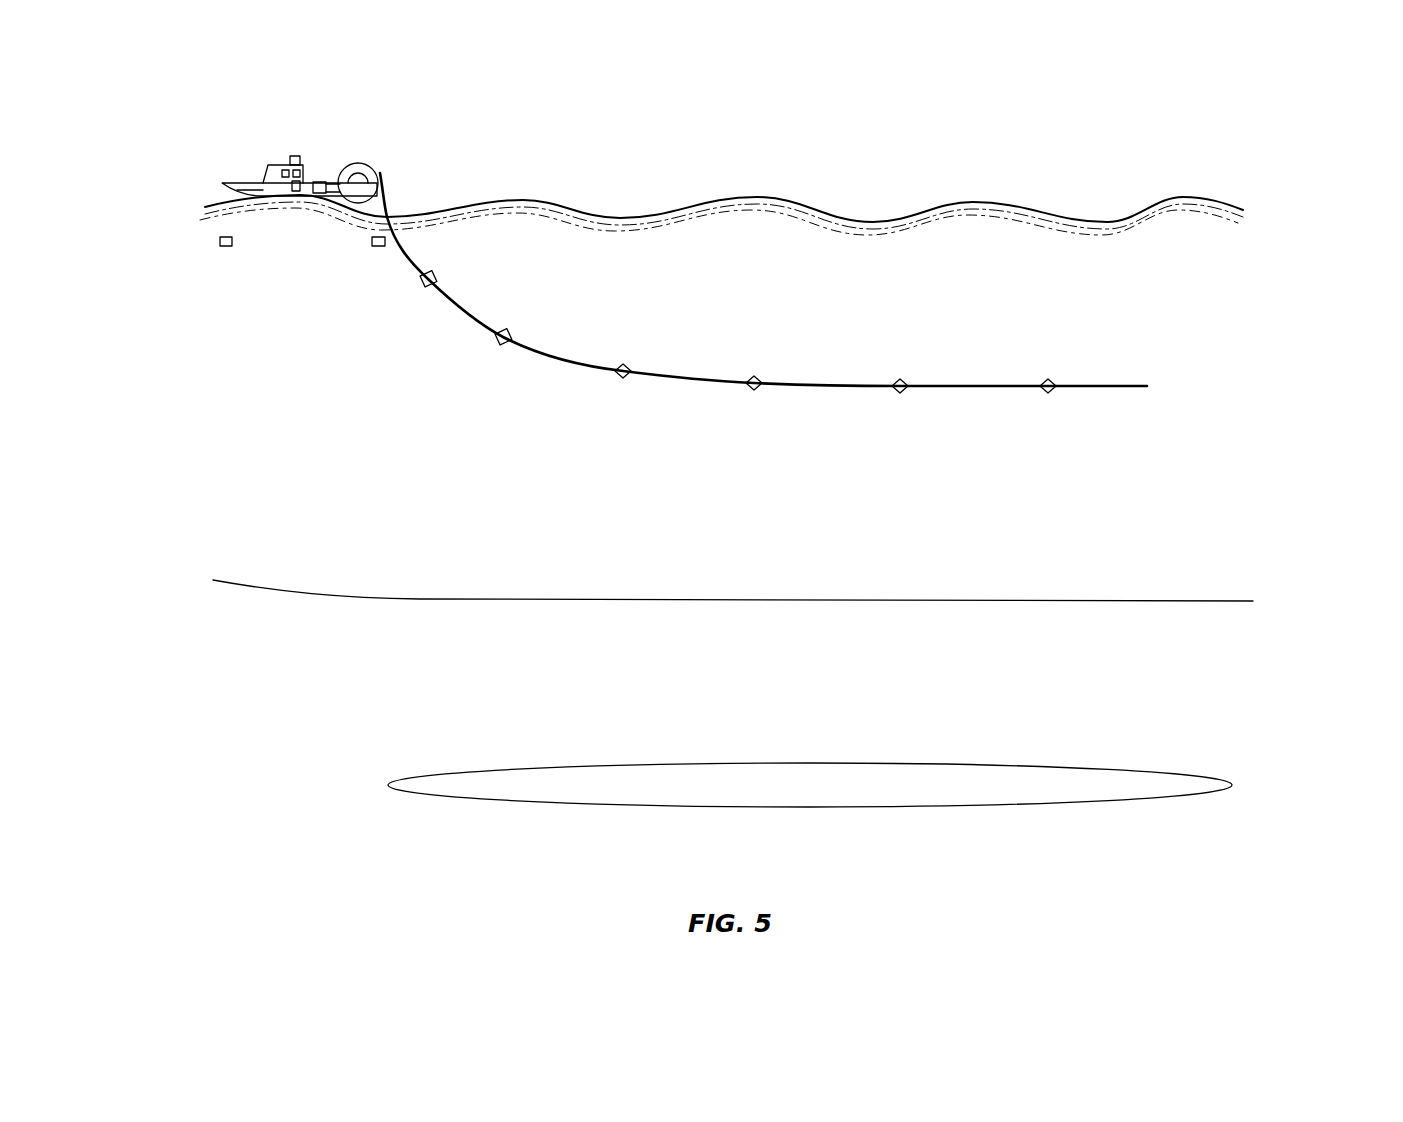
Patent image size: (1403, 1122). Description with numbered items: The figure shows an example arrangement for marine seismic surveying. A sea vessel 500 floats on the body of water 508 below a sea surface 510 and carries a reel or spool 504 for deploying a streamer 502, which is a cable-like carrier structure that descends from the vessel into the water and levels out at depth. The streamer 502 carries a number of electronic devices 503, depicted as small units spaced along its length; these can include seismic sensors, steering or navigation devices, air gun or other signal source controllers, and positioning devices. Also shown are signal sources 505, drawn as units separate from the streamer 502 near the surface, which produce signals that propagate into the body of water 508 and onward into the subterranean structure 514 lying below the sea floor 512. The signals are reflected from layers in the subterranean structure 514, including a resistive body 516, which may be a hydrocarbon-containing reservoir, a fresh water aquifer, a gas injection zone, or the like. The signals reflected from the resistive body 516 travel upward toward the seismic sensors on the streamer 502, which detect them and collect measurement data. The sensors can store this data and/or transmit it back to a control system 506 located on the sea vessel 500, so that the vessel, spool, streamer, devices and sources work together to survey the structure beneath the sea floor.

The sea vessel 500 is at (233, 180).
The streamer 502 is at (570, 358).
The electronic devices 503 is at (615, 373).
The reel or spool 504 is at (373, 172).
The signal sources 505 is at (223, 250).
The control system 506 is at (317, 180).
The body of water 508 is at (564, 530).
The sea surface 510 is at (825, 210).
The sea floor 512 is at (678, 602).
The subterranean structure 514 is at (1258, 603).
The resistive body 516 is at (677, 777).